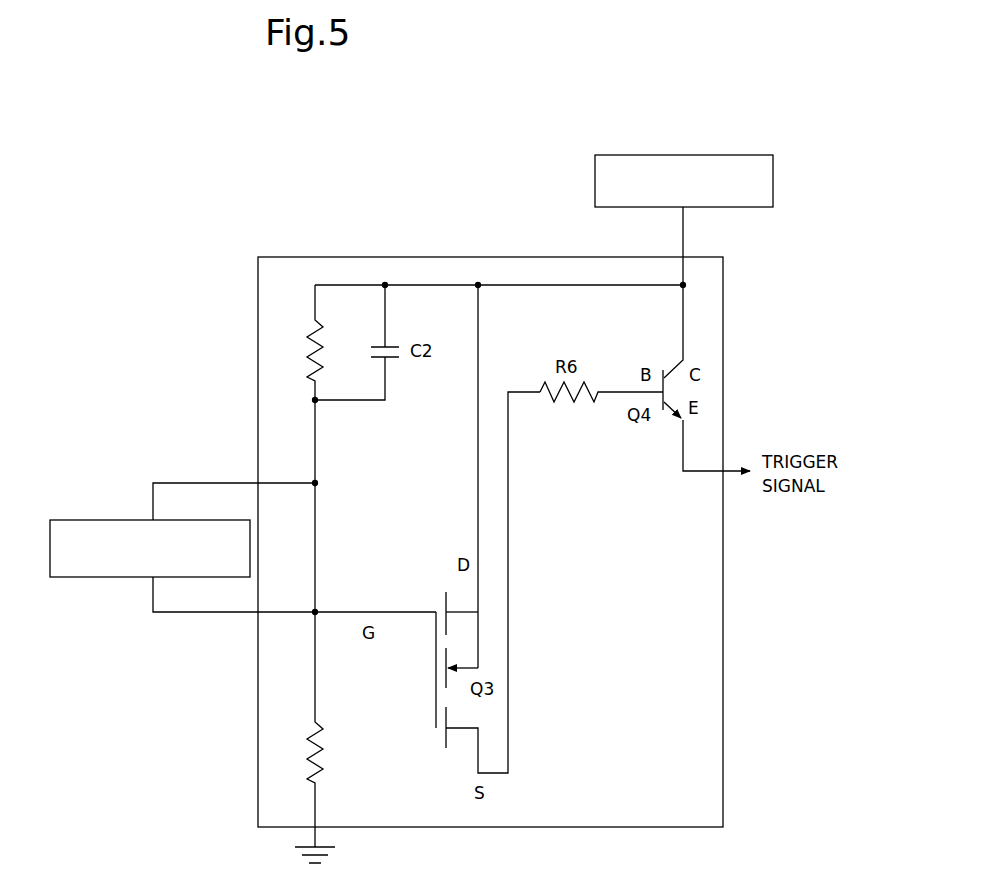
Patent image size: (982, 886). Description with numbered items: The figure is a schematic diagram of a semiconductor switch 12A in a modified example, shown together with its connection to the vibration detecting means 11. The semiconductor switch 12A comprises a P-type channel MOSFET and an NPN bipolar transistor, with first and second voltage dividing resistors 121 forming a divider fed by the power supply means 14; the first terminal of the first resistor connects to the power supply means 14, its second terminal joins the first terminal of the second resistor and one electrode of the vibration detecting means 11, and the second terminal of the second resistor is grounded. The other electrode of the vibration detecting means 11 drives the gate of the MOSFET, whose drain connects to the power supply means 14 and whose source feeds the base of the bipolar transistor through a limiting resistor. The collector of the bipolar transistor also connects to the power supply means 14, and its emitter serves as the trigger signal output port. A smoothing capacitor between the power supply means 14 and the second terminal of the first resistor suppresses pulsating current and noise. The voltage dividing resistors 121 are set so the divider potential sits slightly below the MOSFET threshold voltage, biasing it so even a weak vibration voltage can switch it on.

The vibration detecting means 11 is at (80, 578).
The semiconductor switch 12A is at (637, 83).
The power supply means 14 is at (773, 178).
The resistor 121 is at (310, 366).